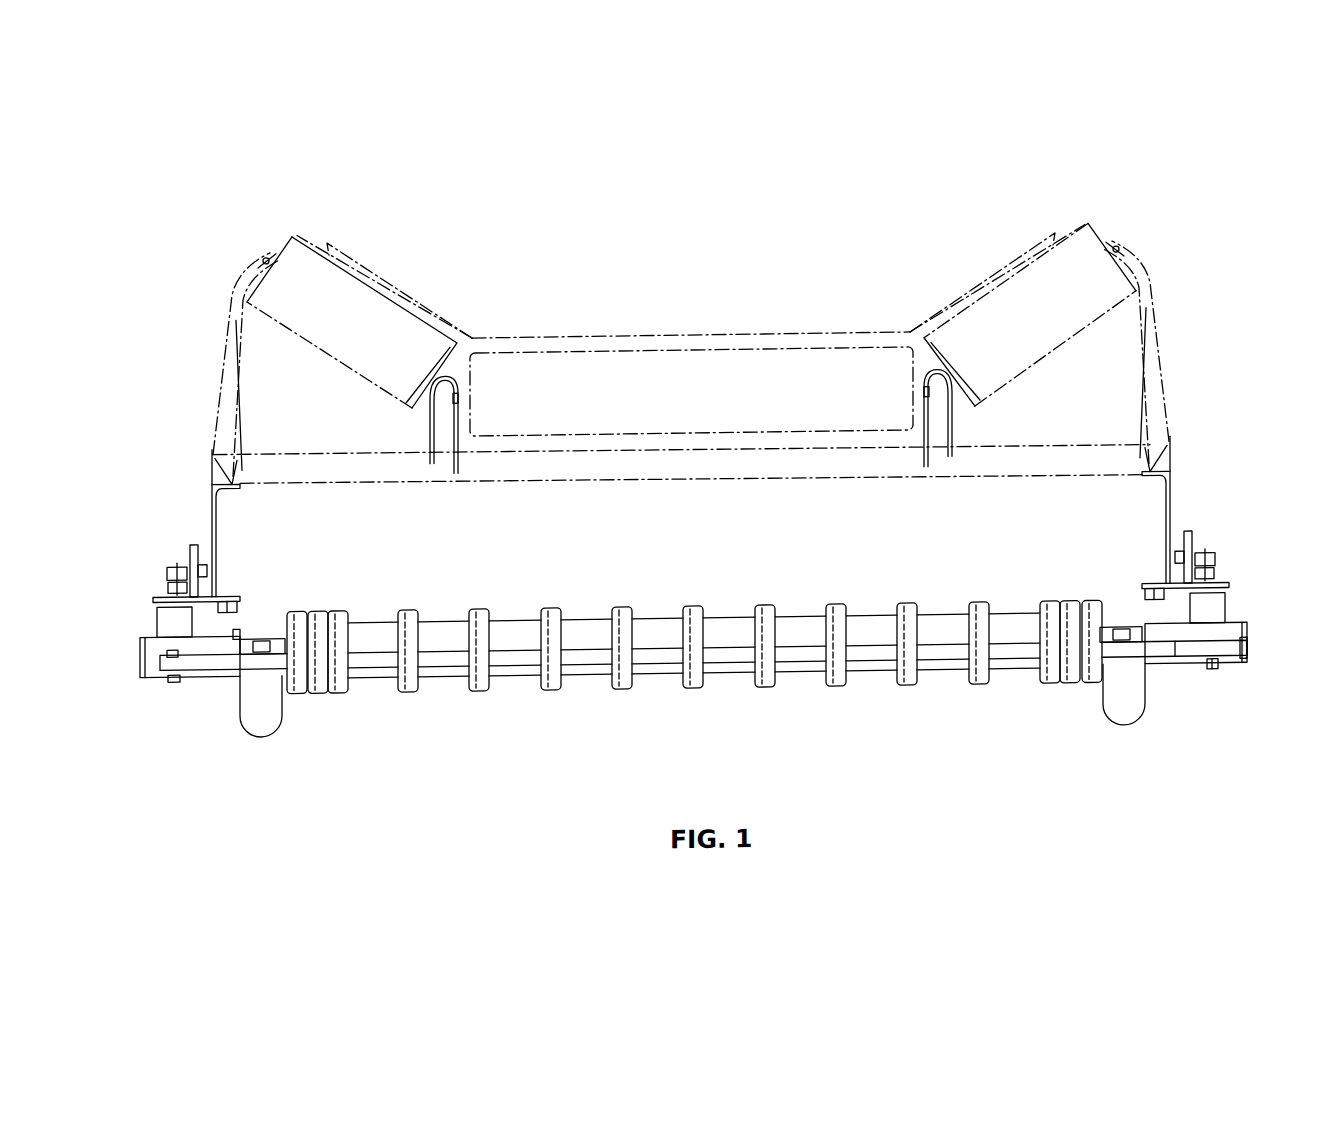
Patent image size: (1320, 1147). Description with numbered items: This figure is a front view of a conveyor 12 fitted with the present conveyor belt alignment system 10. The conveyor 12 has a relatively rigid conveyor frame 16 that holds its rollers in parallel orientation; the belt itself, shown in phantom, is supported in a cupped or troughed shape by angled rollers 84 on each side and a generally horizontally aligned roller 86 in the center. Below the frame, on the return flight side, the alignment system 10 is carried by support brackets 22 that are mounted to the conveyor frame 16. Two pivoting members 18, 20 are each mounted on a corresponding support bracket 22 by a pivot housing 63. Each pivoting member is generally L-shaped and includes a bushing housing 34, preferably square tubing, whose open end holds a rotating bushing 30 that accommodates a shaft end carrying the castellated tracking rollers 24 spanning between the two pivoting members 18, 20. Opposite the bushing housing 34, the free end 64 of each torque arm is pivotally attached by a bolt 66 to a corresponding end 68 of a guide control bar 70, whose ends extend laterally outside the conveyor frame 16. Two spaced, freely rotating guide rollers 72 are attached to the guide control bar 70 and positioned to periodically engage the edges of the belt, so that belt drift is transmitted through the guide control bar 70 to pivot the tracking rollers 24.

The conveyor belt alignment system 10 is at (185, 521).
The conveyor 12 is at (1150, 276).
The conveyor frame 16 is at (1175, 517).
The pivoting member 18 is at (1223, 617).
The pivoting member 20 is at (158, 616).
The support bracket 22 is at (190, 546).
The castellated tracking rollers 24 is at (833, 692).
The rotating bushing 30 is at (240, 631).
The bushing housing 34 is at (205, 670).
The pivot housing 63 is at (160, 605).
The free end 64 is at (1230, 667).
The bolt 66 is at (1213, 679).
The end of guide control bar 68 is at (1233, 658).
The guide control bar 70 is at (1182, 657).
The guide rollers 72 is at (262, 719).
The angled rollers 84 is at (328, 342).
The horizontally aligned rollers 86 is at (697, 372).